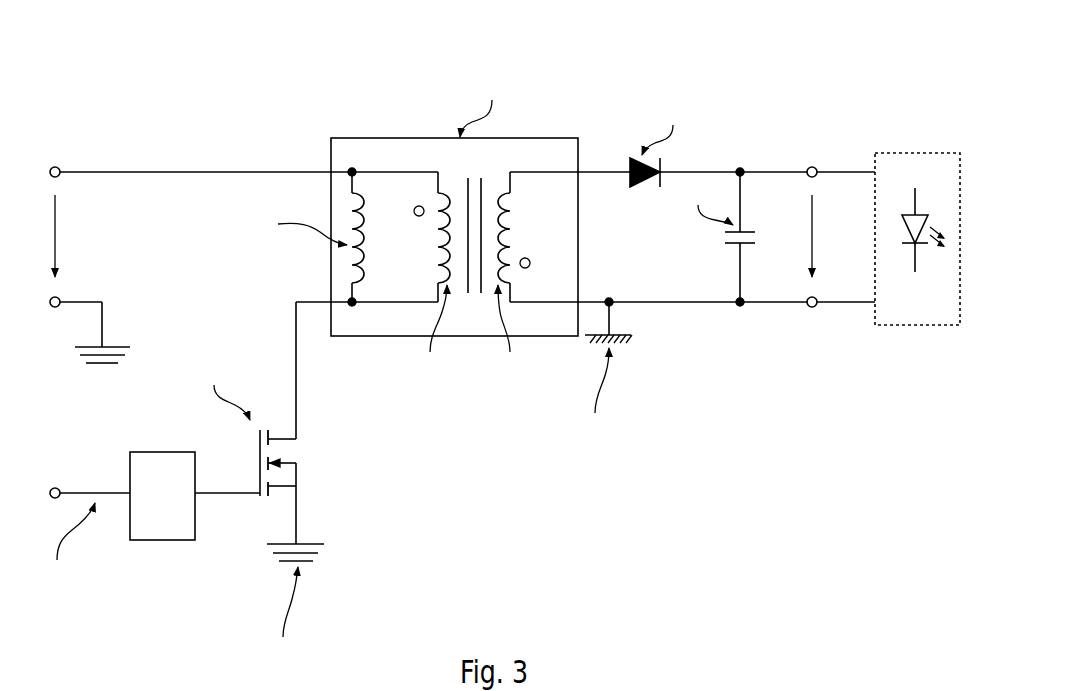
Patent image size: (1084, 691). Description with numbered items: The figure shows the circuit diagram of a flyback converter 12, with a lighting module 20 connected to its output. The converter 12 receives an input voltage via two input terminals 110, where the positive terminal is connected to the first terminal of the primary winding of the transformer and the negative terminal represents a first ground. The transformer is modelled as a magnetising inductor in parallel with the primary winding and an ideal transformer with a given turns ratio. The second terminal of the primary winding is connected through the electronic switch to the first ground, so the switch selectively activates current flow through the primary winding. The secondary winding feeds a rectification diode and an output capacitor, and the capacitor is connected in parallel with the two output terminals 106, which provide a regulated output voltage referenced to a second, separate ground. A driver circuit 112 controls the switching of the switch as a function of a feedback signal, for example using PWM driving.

The flyback converter 12 is at (298, 77).
The input terminals 110 is at (57, 162).
The driver circuit 112 is at (163, 528).
The output terminals 106 is at (812, 148).
The lighting module 20 is at (915, 148).